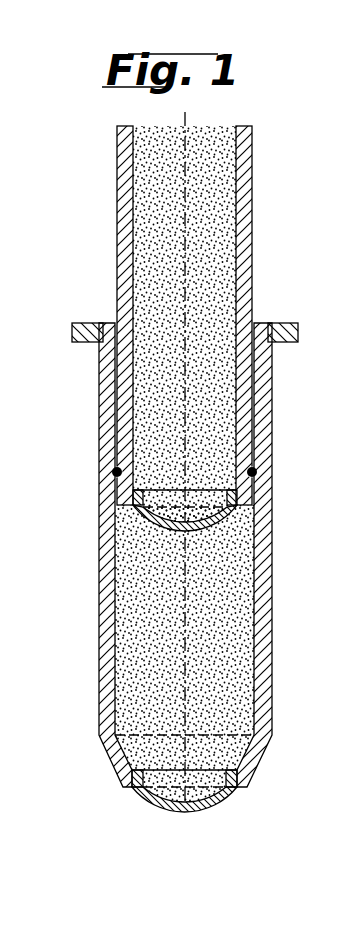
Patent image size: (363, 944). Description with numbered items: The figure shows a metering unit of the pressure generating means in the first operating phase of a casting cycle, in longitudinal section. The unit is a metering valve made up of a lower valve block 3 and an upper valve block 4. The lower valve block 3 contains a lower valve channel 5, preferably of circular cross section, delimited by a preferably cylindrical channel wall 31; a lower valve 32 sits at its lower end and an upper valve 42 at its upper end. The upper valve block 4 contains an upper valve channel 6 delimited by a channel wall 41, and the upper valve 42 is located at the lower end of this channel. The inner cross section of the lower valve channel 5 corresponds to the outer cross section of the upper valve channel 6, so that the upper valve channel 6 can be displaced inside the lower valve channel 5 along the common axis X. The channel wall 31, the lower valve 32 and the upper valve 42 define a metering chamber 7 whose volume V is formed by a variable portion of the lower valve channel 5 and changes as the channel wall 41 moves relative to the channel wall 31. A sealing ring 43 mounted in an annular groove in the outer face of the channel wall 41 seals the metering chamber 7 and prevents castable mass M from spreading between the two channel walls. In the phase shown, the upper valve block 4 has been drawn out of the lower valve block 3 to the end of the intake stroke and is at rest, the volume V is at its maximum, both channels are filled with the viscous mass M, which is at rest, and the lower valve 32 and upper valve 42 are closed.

The lower valve block 3 is at (166, 572).
The upper valve block 4 is at (147, 331).
The lower valve channel 5 is at (119, 660).
The upper valve channel 6 is at (139, 260).
The metering chamber 7 is at (228, 600).
The channel wall 31 is at (105, 712).
The lower valve 32 is at (155, 808).
The channel wall 41 is at (120, 152).
The upper valve 42 is at (153, 527).
The sealing ring 43 is at (112, 472).
The castable mass M is at (173, 464).
The volume V is at (227, 696).
The axis X is at (174, 452).